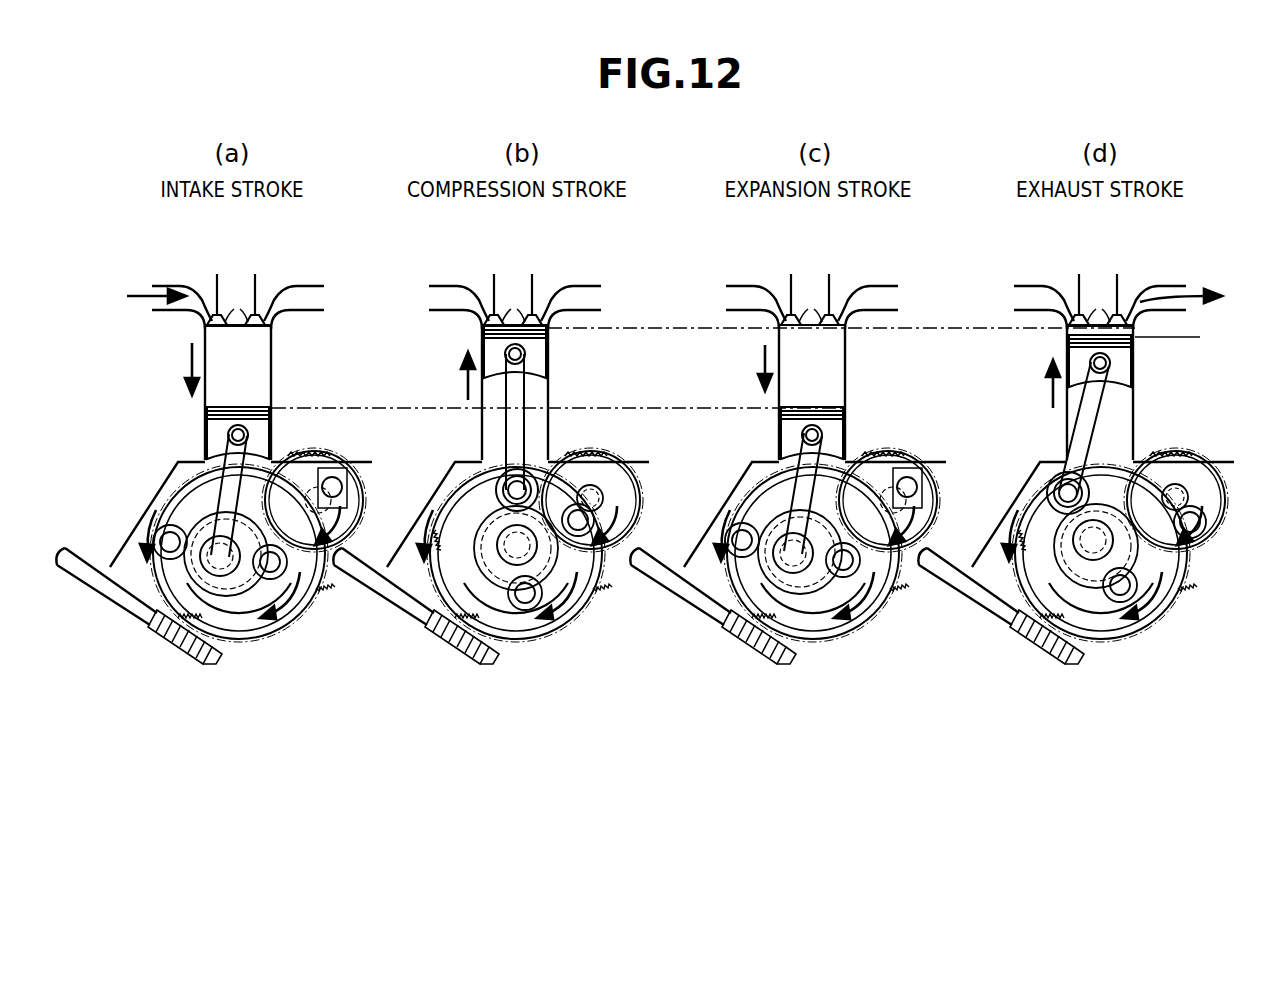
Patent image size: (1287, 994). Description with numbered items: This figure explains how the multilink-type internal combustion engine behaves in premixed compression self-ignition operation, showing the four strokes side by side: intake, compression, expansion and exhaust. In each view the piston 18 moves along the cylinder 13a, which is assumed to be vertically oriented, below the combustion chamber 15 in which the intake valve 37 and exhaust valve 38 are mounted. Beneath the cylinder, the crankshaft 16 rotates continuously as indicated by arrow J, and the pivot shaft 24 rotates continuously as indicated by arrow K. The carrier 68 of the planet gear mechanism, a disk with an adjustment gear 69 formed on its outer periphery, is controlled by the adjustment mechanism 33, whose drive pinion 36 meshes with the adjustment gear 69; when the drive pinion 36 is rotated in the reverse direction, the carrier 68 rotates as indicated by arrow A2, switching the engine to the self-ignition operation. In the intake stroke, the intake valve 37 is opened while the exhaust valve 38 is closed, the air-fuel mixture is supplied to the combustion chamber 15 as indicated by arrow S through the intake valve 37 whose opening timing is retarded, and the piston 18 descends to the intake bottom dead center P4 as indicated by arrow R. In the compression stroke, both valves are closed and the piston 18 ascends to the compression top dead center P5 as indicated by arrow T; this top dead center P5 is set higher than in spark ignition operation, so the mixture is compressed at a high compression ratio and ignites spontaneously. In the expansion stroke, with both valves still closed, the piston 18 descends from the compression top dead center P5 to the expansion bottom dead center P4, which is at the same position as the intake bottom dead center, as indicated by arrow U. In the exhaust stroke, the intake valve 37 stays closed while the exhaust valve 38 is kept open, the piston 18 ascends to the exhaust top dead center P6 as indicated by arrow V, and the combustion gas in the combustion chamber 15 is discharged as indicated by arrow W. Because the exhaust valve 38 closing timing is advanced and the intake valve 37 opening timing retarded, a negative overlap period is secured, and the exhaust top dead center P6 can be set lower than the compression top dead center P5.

The cylinder 13a is at (272, 375).
The combustion chamber 15 is at (252, 333).
The crankshaft 16 is at (228, 582).
The piston 18 is at (215, 436).
The pivot shaft 24 is at (341, 501).
The adjustment mechanism 33 is at (104, 604).
The drive pinion 36 is at (184, 650).
The intake valve 37 is at (206, 326).
The exhaust valve 38 is at (258, 320).
The carrier 68 is at (168, 585).
The adjustment gear 69 is at (231, 620).
The arrow A2 is at (140, 540).
The arrow J is at (285, 608).
The arrow K is at (342, 538).
The arrow S is at (142, 290).
The arrow W is at (1200, 292).
The arrow R is at (188, 366).
The arrow T is at (464, 380).
The arrow U is at (761, 365).
The arrow V is at (1050, 386).
The intake bottom dead center P4 is at (846, 408).
The compression top dead center P5 is at (1135, 328).
The exhaust top dead center P6 is at (1200, 337).